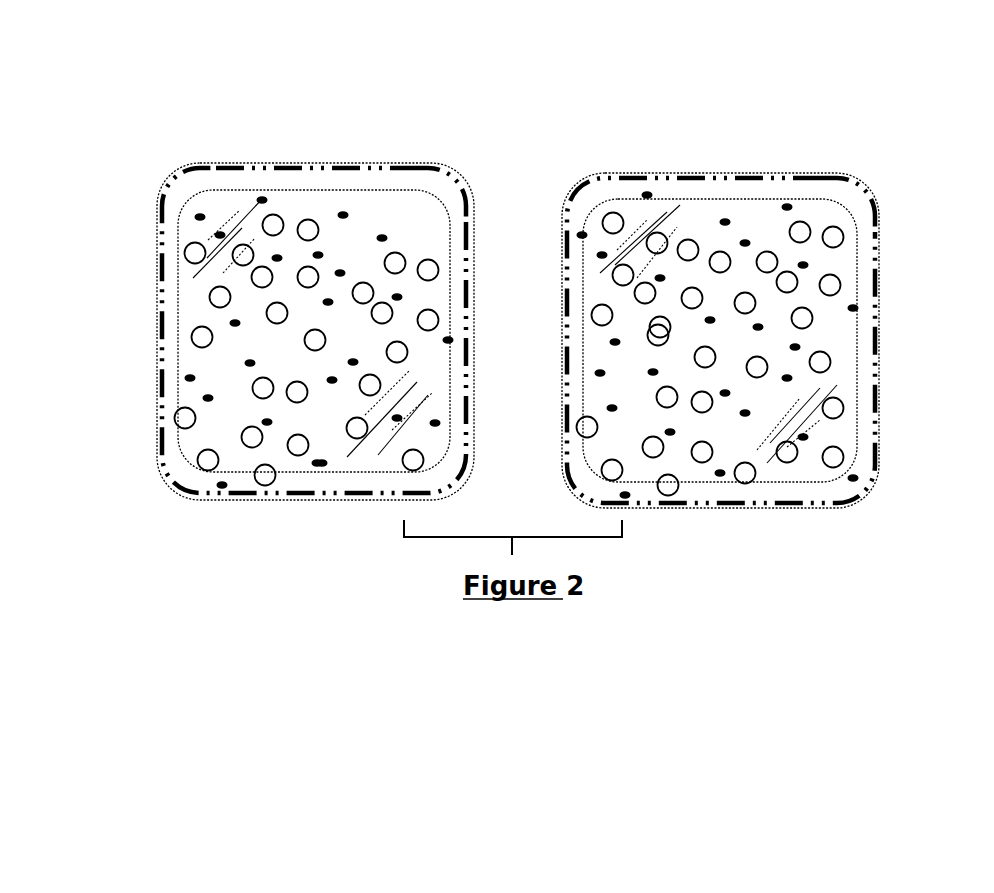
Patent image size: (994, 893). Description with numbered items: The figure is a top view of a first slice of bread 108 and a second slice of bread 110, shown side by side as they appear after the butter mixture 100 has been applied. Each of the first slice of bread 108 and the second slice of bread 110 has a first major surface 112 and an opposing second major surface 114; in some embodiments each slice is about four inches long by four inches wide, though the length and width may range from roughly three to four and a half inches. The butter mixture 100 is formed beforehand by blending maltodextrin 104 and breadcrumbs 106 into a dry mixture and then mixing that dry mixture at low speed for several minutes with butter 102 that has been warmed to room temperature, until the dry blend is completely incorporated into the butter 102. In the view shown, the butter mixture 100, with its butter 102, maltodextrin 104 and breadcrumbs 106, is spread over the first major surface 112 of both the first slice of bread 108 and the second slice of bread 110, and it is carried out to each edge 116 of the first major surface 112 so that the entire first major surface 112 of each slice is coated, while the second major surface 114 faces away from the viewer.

The butter mixture 100 is at (157, 300).
The butter 102 is at (177, 215).
The maltodextrin 104 is at (197, 213).
The breadcrumbs 106 is at (275, 214).
The first slice of bread 108 is at (135, 448).
The second slice of bread 110 is at (890, 428).
The first major surface 112 is at (332, 210).
The second major surface 114 is at (427, 157).
The edge 116 is at (160, 193).